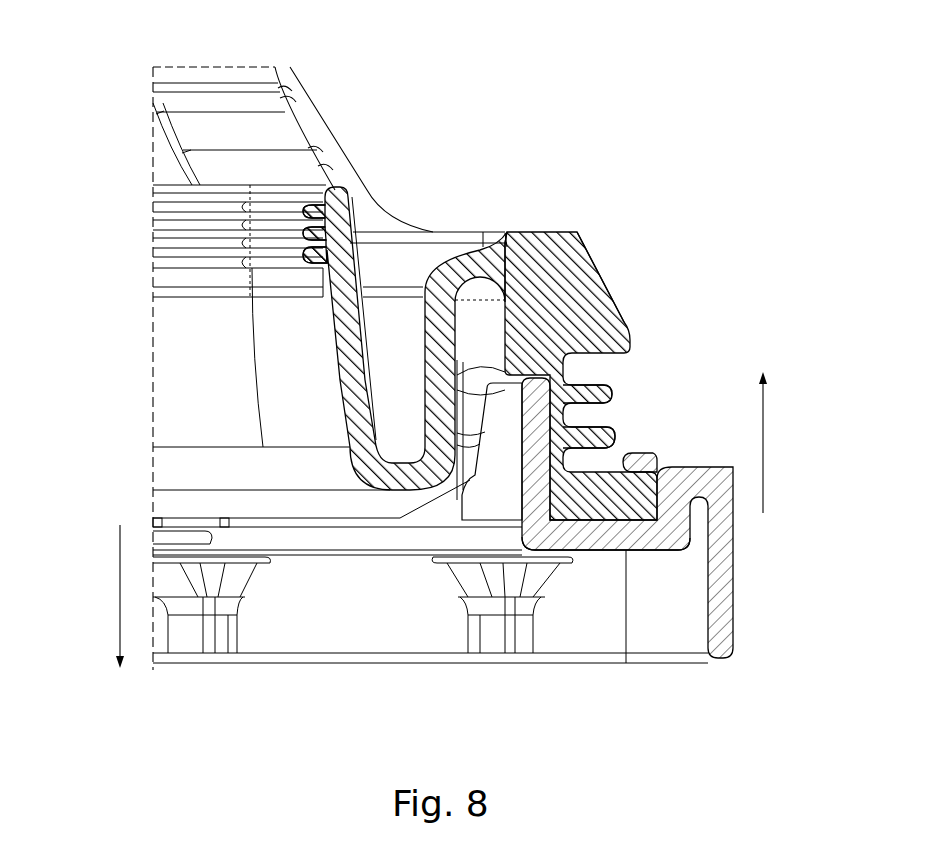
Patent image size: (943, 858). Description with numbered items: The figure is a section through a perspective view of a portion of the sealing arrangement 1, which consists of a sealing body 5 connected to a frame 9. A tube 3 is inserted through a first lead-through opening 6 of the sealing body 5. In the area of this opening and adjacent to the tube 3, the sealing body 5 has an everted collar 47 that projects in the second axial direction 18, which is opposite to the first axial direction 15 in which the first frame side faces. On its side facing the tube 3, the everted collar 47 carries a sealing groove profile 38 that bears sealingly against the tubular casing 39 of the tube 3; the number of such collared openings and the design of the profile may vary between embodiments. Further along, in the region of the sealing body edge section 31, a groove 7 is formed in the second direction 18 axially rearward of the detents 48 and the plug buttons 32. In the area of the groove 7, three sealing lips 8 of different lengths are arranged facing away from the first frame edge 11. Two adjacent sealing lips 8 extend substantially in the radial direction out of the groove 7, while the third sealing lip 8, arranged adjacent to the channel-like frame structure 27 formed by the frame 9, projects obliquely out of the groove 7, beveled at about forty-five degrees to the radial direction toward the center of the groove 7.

The sealing arrangement 1 is at (483, 100).
The tube 3 is at (170, 281).
The sealing body 5 is at (609, 336).
The first lead-through opening 6 is at (150, 183).
The groove 7 is at (623, 373).
The sealing lips 8 is at (622, 431).
The frame 9 is at (668, 556).
The first frame edge 11 is at (522, 468).
The first axial direction 15 is at (120, 634).
The second axial direction 18 is at (763, 440).
The channel-like frame structure 27 is at (607, 558).
The sealing body edge section 31 is at (580, 327).
The plug buttons 32 is at (533, 660).
The sealing groove profile 38 is at (318, 190).
The tubular casing 39 is at (310, 278).
The everted collar 47 is at (345, 283).
The detents 48 is at (550, 583).